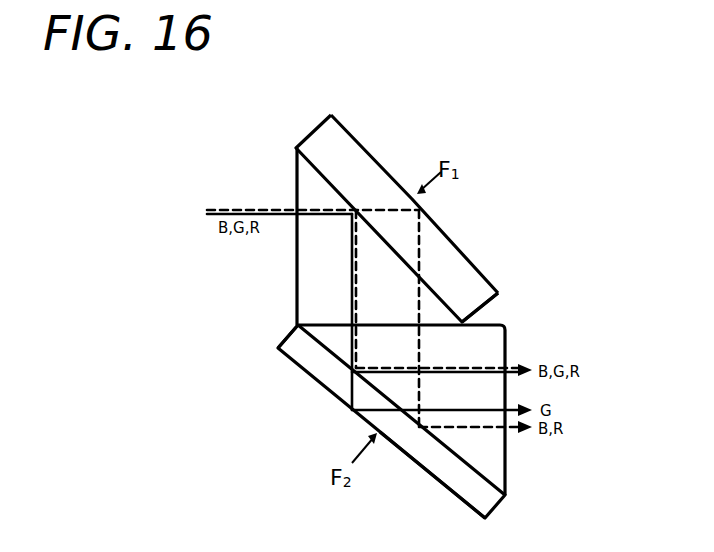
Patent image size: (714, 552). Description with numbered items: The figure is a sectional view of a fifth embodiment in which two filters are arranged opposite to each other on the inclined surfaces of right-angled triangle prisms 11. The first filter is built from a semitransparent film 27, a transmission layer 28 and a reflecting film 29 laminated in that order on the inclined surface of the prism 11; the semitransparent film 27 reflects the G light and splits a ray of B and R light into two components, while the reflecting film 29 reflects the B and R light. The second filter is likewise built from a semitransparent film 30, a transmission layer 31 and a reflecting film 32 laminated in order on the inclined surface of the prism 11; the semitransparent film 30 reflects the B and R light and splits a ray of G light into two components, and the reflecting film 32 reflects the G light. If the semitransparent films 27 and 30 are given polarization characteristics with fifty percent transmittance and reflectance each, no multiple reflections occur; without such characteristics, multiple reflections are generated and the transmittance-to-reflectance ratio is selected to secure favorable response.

The right-angled triangle prism 11 is at (297, 277).
The semitransparent film 27 is at (311, 160).
The transmission layer 28 is at (473, 274).
The reflecting film 29 is at (366, 153).
The semitransparent film 30 is at (295, 337).
The transmission layer 31 is at (440, 480).
The reflecting film 32 is at (310, 378).